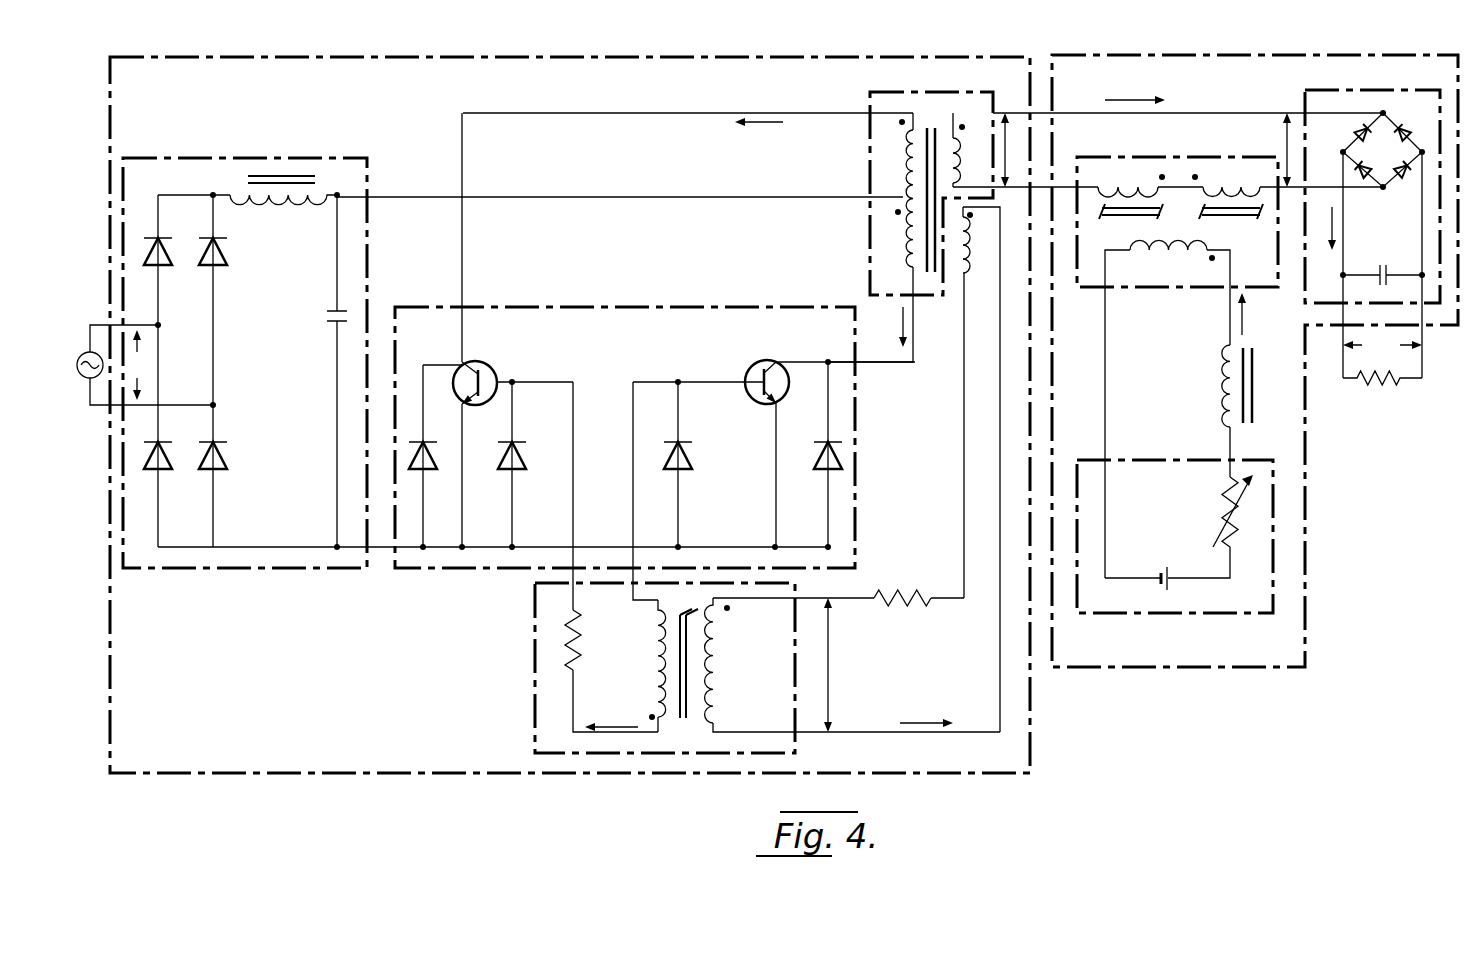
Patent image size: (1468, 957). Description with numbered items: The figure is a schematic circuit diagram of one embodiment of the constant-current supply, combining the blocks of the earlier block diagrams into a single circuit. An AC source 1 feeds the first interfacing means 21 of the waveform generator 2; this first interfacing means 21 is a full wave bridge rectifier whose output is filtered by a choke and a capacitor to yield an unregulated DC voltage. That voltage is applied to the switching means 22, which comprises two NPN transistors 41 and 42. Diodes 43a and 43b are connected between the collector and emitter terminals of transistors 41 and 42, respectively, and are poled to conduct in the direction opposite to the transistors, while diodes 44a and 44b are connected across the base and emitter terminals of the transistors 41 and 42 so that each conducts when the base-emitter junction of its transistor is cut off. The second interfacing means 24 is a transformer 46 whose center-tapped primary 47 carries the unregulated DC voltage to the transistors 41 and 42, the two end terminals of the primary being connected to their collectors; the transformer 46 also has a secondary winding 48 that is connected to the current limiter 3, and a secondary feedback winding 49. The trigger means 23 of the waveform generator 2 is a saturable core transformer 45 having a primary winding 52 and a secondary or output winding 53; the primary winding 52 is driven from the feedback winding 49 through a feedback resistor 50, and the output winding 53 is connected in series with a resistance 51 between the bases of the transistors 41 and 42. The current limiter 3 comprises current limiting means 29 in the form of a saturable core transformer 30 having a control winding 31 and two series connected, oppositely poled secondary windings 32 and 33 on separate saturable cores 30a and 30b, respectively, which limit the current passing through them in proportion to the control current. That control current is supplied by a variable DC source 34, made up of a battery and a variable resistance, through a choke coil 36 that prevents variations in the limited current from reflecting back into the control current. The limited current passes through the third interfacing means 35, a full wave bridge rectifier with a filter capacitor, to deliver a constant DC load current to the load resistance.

The AC source 1 is at (90, 352).
The waveform generator 2 is at (1036, 717).
The current limiter 3 is at (1305, 440).
The first interfacing means 21 is at (212, 577).
The switching means 22 is at (418, 571).
The trigger means 23 is at (534, 683).
The second interfacing means 24 is at (868, 103).
The current limiting means 29 is at (1090, 290).
The saturable core transformer 30 is at (1257, 222).
The saturable core 30a is at (1146, 218).
The saturable core 30b is at (1208, 218).
The control winding 31 is at (1163, 257).
The secondary winding 32 is at (1130, 185).
The secondary winding 33 is at (1235, 185).
The variable DC source 34 is at (1142, 613).
The third interfacing means 35 is at (1327, 90).
The choke coil 36 is at (1215, 380).
The transistor 41 is at (476, 361).
The transistor 42 is at (760, 361).
The diode 43a is at (435, 457).
The diode 43b is at (823, 474).
The diode 44a is at (514, 470).
The diode 44b is at (684, 470).
The saturable core transformer 45 is at (684, 722).
The transformer 46 is at (938, 134).
The center-tapped primary 47 is at (903, 170).
The secondary winding 48 is at (968, 155).
The secondary feedback winding 49 is at (975, 265).
The feedback resistor 50 is at (915, 591).
The resistance 51 is at (580, 630).
The primary winding 52 is at (720, 655).
The secondary or output winding 53 is at (650, 645).